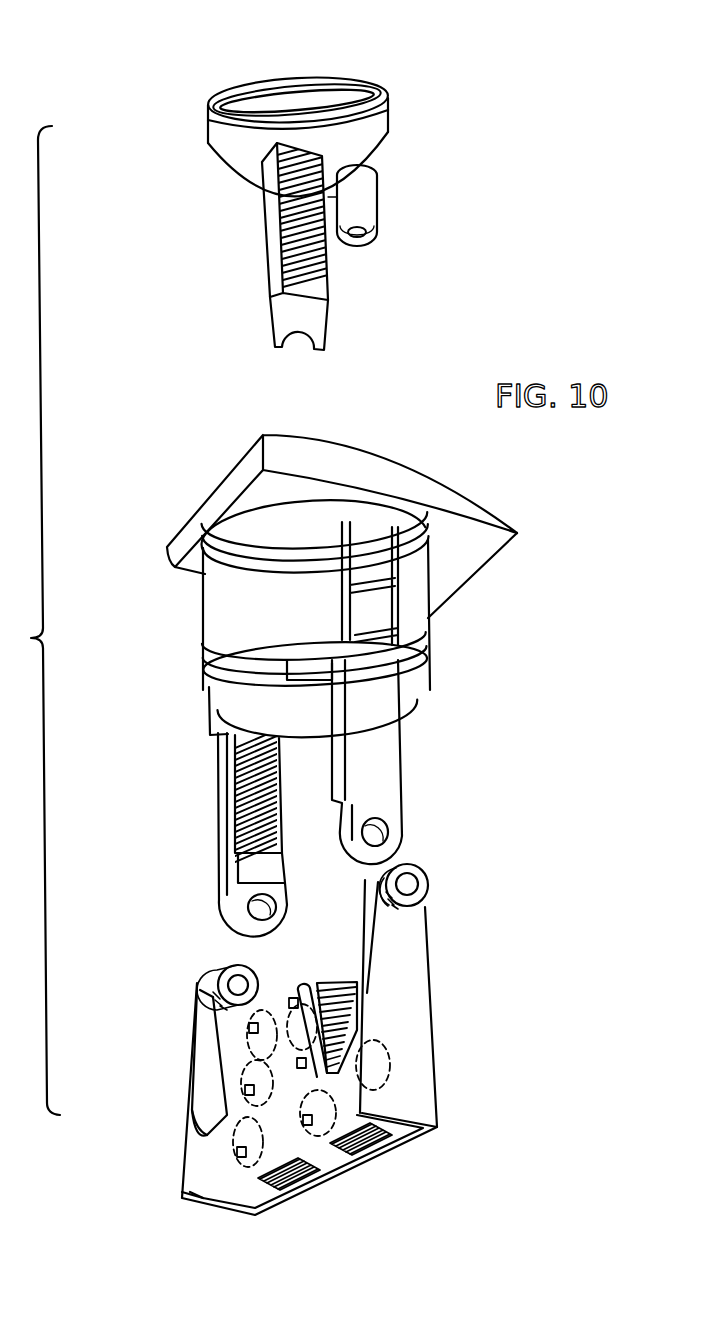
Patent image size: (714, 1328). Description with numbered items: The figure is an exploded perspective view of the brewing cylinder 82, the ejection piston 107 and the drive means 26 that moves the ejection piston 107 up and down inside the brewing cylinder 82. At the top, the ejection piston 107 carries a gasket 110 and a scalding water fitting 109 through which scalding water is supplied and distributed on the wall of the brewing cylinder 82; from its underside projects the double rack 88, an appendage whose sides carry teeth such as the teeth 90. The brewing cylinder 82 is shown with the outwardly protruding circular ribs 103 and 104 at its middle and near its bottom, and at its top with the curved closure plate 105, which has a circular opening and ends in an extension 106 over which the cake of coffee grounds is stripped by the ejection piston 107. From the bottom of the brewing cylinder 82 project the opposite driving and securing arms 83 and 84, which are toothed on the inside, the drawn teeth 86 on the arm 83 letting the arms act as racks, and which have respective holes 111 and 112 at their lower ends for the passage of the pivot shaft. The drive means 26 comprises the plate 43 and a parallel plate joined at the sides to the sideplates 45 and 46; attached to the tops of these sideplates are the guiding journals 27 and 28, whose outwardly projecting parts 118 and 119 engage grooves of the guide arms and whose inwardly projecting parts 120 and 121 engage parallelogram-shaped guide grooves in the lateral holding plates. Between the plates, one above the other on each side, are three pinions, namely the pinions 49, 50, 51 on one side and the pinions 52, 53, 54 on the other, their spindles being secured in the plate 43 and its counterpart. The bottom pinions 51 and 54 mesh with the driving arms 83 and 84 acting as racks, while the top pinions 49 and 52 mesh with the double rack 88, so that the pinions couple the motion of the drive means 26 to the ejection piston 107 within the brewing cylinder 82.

The ejection piston 107 is at (288, 82).
The gasket 110 is at (338, 88).
The scalding water fitting 109 is at (367, 193).
The double rack 88 is at (267, 272).
The teeth 90 is at (328, 280).
The curved closure plate 105 is at (210, 497).
The extension 106 is at (472, 553).
The circular rib 103 is at (432, 605).
The brewing cylinder 82 is at (220, 628).
The circular rib 104 is at (433, 686).
The driving and securing arm 83 is at (225, 765).
The driving and securing arm 84 is at (385, 750).
The rack teeth 86 is at (238, 828).
The hole 112 is at (392, 832).
The hole 111 is at (248, 908).
The outwardly projecting part 119 is at (420, 872).
The guiding journal 28 is at (430, 888).
The inwardly projecting part 121 is at (366, 889).
The inwardly projecting part 120 is at (245, 972).
The guiding journal 27 is at (198, 991).
The outwardly projecting part 118 is at (200, 1002).
The pinion 52 is at (350, 983).
The sideplate 46 is at (420, 995).
The pinion 49 is at (250, 1043).
The pinion 53 is at (383, 1060).
The sideplate 45 is at (195, 1080).
The drive means 26 is at (445, 1070).
The pinion 50 is at (248, 1102).
The plate 43 is at (197, 1158).
The pinion 54 is at (377, 1157).
The pinion 51 is at (270, 1200).